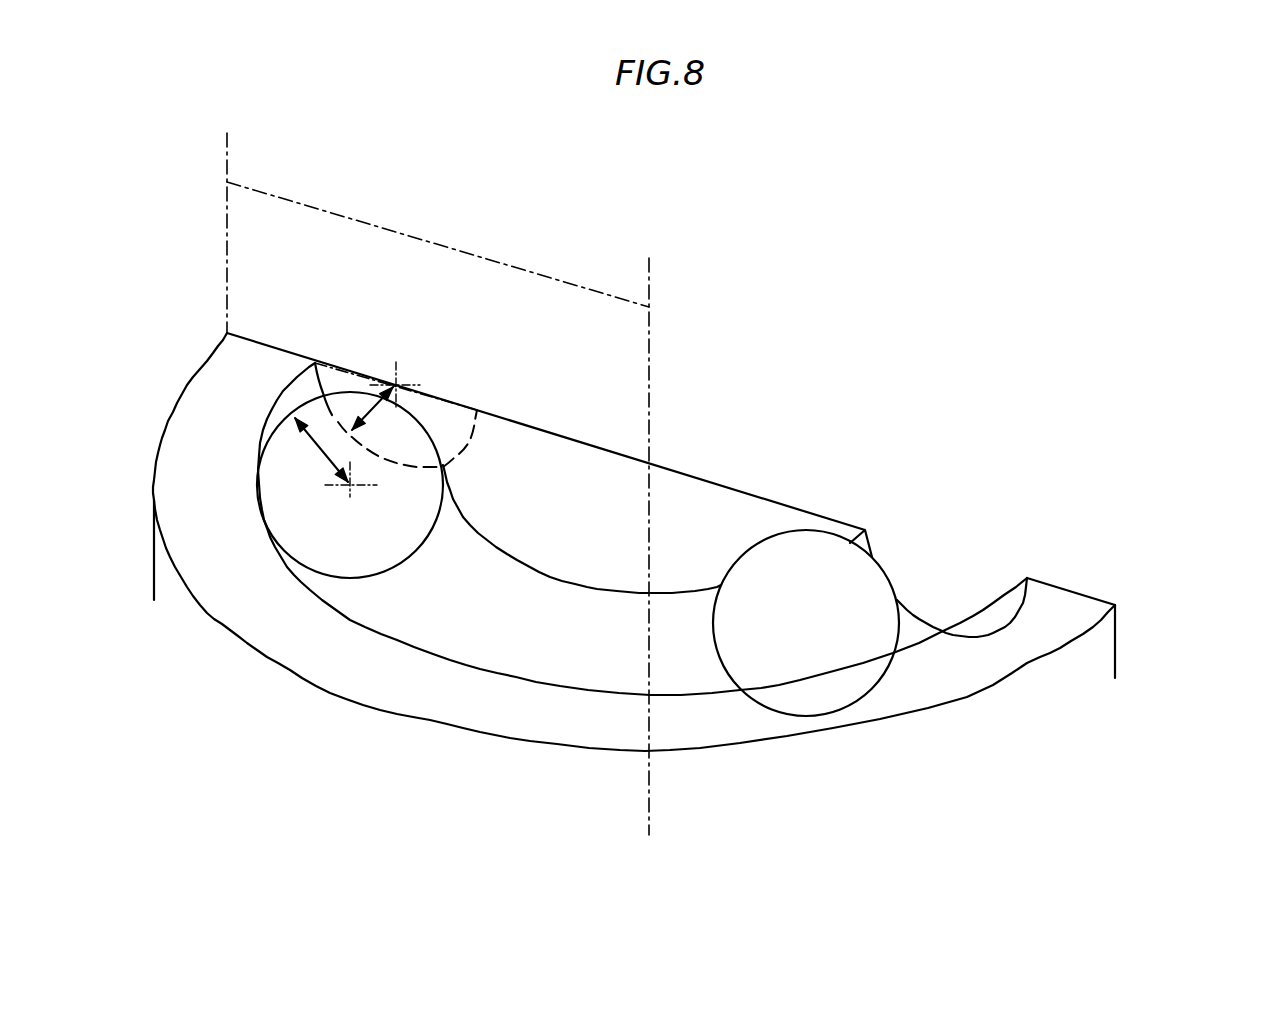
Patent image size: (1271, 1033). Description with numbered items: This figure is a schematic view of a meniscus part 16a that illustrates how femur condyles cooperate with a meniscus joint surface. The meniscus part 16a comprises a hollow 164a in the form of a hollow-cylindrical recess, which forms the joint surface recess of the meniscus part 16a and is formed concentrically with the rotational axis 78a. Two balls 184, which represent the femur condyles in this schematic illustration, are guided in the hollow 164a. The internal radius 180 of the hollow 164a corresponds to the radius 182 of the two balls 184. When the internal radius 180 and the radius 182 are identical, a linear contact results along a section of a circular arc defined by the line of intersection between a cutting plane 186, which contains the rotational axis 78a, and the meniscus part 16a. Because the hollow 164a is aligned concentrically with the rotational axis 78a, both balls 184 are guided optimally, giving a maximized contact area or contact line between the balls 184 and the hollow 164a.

The meniscus part 16a is at (1100, 655).
The hollow 164a is at (587, 590).
The balls 184 is at (397, 543).
The internal radius 180 is at (373, 405).
The radius 182 is at (318, 452).
The cutting plane 186 is at (587, 320).
The rotational axis 78a is at (649, 290).